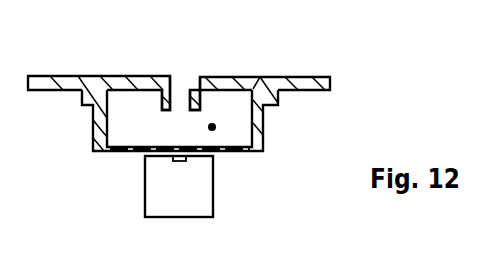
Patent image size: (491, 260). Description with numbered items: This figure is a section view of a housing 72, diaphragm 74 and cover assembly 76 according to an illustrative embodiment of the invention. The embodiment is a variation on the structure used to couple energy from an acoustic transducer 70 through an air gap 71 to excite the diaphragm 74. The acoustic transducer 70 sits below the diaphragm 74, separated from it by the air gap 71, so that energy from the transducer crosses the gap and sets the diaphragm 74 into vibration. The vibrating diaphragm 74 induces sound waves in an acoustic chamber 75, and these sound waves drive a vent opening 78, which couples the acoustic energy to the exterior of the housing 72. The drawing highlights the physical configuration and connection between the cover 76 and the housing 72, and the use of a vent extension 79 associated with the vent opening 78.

The acoustic transducer 70 is at (171, 218).
The air gap 71 is at (220, 158).
The housing 72 is at (67, 76).
The diaphragm 74 is at (133, 153).
The acoustic chamber 75 is at (212, 127).
The cover assembly 76 is at (207, 78).
The vent opening 78 is at (182, 78).
The vent extension 79 is at (163, 99).